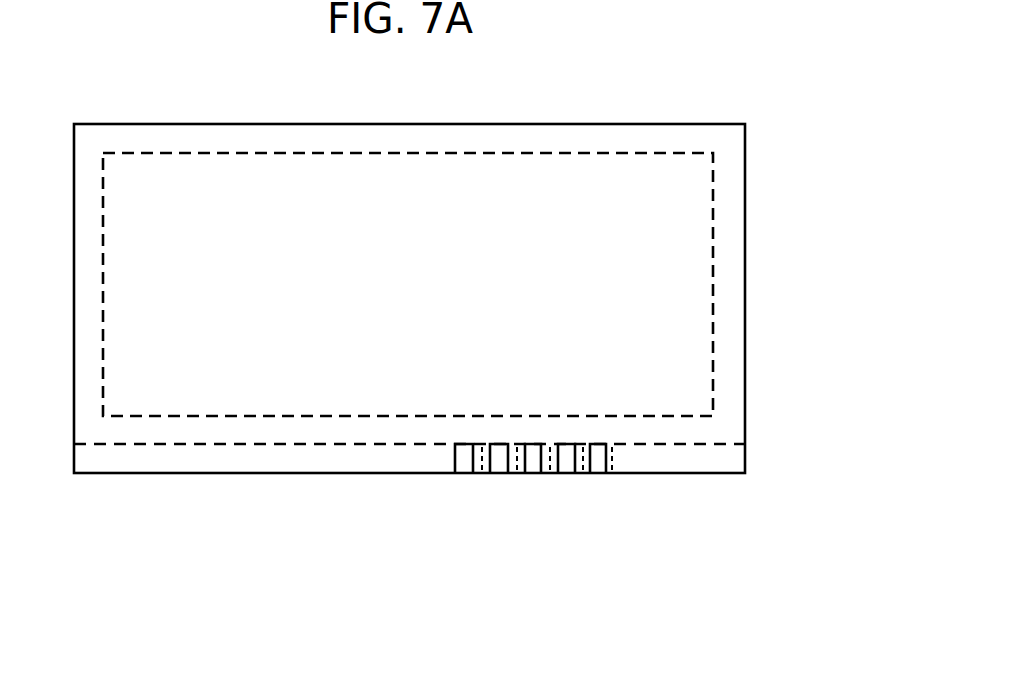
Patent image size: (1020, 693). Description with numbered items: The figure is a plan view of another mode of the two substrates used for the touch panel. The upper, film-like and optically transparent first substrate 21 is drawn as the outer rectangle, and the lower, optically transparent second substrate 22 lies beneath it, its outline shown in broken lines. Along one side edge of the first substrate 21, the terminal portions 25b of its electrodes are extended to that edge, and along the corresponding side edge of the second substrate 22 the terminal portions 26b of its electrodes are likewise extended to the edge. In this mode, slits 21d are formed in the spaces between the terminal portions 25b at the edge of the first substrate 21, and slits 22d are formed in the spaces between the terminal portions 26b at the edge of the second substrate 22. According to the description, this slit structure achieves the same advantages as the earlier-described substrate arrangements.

The first substrate 21 is at (467, 135).
The second substrate 22 is at (583, 125).
The slits 21d is at (473, 452).
The slits 22d is at (490, 452).
The terminal portions 25b is at (452, 455).
The terminal portions 26b is at (590, 452).